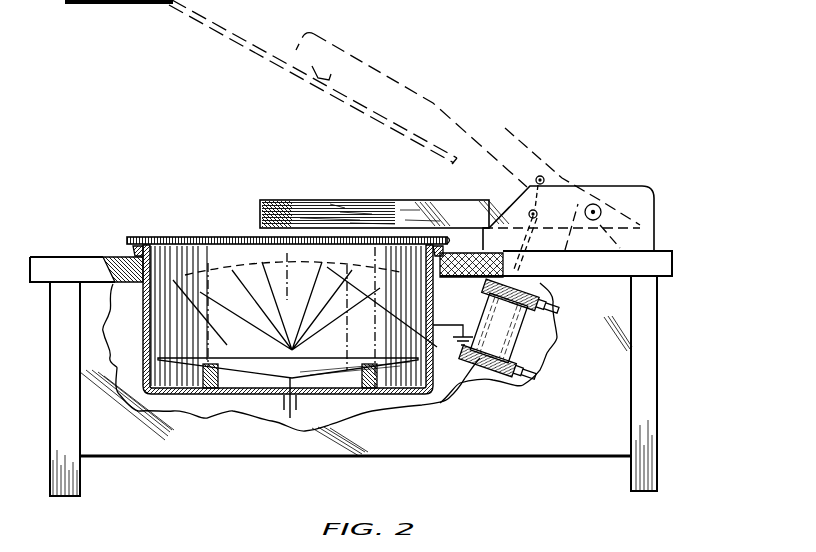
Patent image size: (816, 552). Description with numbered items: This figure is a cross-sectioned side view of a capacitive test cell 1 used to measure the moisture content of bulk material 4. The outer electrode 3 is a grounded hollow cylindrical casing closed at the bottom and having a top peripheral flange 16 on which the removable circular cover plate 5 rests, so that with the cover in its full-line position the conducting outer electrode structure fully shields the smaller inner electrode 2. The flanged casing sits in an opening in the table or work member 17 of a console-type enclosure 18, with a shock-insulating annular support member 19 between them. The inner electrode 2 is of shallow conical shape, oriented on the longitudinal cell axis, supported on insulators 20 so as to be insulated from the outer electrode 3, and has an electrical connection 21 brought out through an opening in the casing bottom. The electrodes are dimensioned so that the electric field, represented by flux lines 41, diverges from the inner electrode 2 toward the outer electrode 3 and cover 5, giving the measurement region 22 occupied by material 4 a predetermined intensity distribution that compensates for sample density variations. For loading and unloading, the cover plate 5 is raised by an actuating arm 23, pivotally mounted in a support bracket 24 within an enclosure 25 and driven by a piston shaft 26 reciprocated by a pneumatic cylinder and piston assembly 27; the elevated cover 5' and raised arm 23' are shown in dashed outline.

The capacitive test cell 1 is at (558, 108).
The inner electrode 2 is at (276, 358).
The outer electrode 3 is at (147, 347).
The material 4 is at (314, 272).
The cover plate 5 is at (288, 219).
The cover plate in elevated position 5' is at (313, 82).
The top peripheral flange 16 is at (133, 250).
The table or work member 17 is at (62, 265).
The console-type enclosure 18 is at (290, 200).
The shock-insulating annular support member 19 is at (147, 284).
The insulators 20 is at (218, 386).
The electrical connection 21 is at (293, 411).
The measurement region 22 is at (248, 262).
The actuating arm 23 is at (384, 201).
The actuating arm in elevated position 23' is at (468, 141).
The support bracket 24 is at (640, 216).
The enclosure 25 is at (614, 186).
The piston shaft 26 is at (525, 262).
The pneumatic cylinder and piston assembly 27 is at (503, 338).
The field flux lines 41 is at (316, 314).